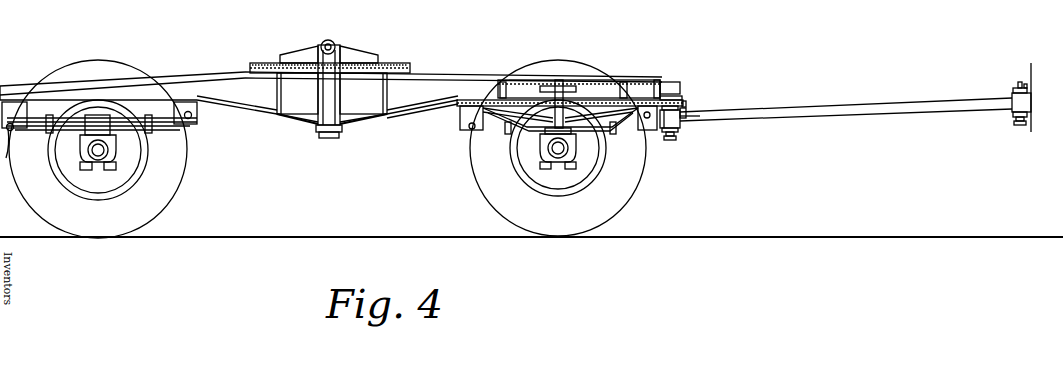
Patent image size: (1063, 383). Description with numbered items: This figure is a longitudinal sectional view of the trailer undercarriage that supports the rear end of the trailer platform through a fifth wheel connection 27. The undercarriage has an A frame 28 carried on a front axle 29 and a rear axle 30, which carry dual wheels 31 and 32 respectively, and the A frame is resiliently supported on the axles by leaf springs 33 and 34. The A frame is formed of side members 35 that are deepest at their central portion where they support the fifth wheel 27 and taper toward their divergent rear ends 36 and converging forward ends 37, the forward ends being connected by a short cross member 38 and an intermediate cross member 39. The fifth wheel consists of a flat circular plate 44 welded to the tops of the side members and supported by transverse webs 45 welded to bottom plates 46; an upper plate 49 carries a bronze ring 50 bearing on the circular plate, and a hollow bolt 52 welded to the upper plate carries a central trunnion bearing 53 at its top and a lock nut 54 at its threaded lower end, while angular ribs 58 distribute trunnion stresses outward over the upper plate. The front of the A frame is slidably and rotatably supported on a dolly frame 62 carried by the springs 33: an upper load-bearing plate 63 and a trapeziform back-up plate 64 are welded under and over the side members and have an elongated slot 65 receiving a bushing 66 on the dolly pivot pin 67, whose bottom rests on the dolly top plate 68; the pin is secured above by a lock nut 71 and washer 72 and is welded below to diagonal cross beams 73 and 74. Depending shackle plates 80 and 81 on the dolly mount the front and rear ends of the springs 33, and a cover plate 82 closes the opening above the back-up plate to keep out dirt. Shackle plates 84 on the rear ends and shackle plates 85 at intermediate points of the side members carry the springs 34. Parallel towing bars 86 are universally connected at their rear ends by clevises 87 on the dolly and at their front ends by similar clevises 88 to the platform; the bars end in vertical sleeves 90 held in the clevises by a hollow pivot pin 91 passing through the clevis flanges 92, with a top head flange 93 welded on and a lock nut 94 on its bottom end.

The fifth wheel connection 27 is at (405, 66).
The A frame 28 is at (416, 112).
The front axle 29 is at (558, 152).
The rear axle 30 is at (98, 152).
The dual wheels 31 is at (626, 195).
The dual wheels 32 is at (172, 196).
The leaf springs 33 is at (486, 116).
The leaf springs 34 is at (170, 130).
The side members 35 is at (226, 72).
The rear ends 36 is at (22, 86).
The forward ends 37 is at (672, 96).
The short cross member 38 is at (664, 82).
The intermediate cross member 39 is at (502, 82).
The flat circular plate 44 is at (300, 78).
The webs 45 is at (277, 92).
The bottom plates 46 is at (283, 116).
The upper plate 49 is at (350, 62).
The bronze ring 50 is at (270, 63).
The hollow bolt 52 is at (338, 94).
The central trunnion bearing 53 is at (322, 44).
The lock nut 54 is at (338, 138).
The angular ribs 58 is at (306, 54).
The dolly frame 62 is at (522, 158).
The upper load-bearing plate 63 is at (686, 108).
The back-up plate 64 is at (656, 80).
The elongated slot 65 is at (623, 82).
The bushing 66 is at (518, 115).
The pivot pin 67 is at (562, 116).
The top plate 68 is at (474, 100).
The lock nut 71 is at (562, 86).
The washer 72 is at (552, 86).
The cross beam 73 is at (612, 134).
The cross beam 74 is at (506, 134).
The spring shackle plates 80 is at (648, 132).
The shackle plates 81 is at (468, 130).
The cover plate 82 is at (536, 80).
The shackle plates 84 is at (21, 153).
The shackle plates 85 is at (196, 112).
The towing bars 86 is at (856, 112).
The clevises 87 is at (672, 128).
The clevises 88 is at (1020, 118).
The vertical sleeves 90 is at (1018, 86).
The hollow pivot pin 91 is at (688, 138).
The flanges 92 is at (668, 132).
The top head flange 93 is at (1026, 86).
The lock nut 94 is at (690, 125).